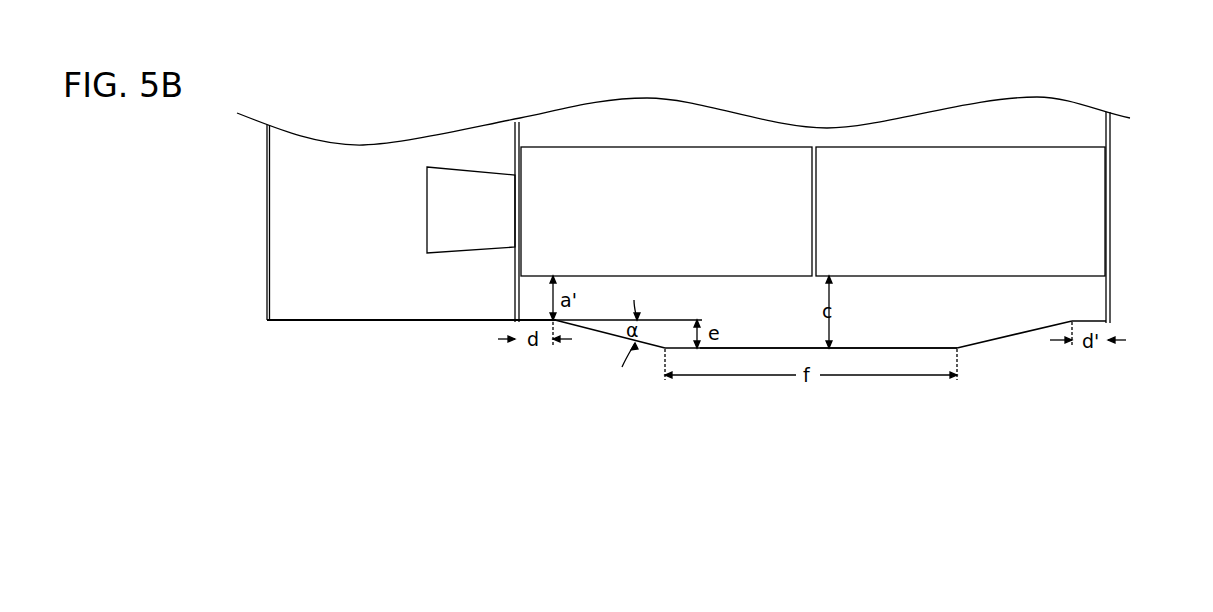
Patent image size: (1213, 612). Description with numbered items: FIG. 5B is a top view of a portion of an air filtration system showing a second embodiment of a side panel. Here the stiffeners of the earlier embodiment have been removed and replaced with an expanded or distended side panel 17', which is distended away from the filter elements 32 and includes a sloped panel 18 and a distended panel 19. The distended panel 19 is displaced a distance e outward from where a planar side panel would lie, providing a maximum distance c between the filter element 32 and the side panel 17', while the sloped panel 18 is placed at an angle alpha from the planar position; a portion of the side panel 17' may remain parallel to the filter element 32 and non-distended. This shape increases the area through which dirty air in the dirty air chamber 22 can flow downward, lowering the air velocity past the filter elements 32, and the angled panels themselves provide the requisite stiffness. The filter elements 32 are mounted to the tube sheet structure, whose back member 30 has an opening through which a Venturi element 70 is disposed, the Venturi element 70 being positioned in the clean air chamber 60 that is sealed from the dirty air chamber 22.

The clean air chamber 60 is at (343, 142).
The Venturi element 70 is at (439, 167).
The back member 30 is at (518, 136).
The filter element 32 is at (558, 147).
The sloped panel 18 is at (588, 332).
The distended panel 19 is at (747, 350).
The distended side panel 17' is at (828, 391).
The dirty air chamber 22 is at (1032, 333).